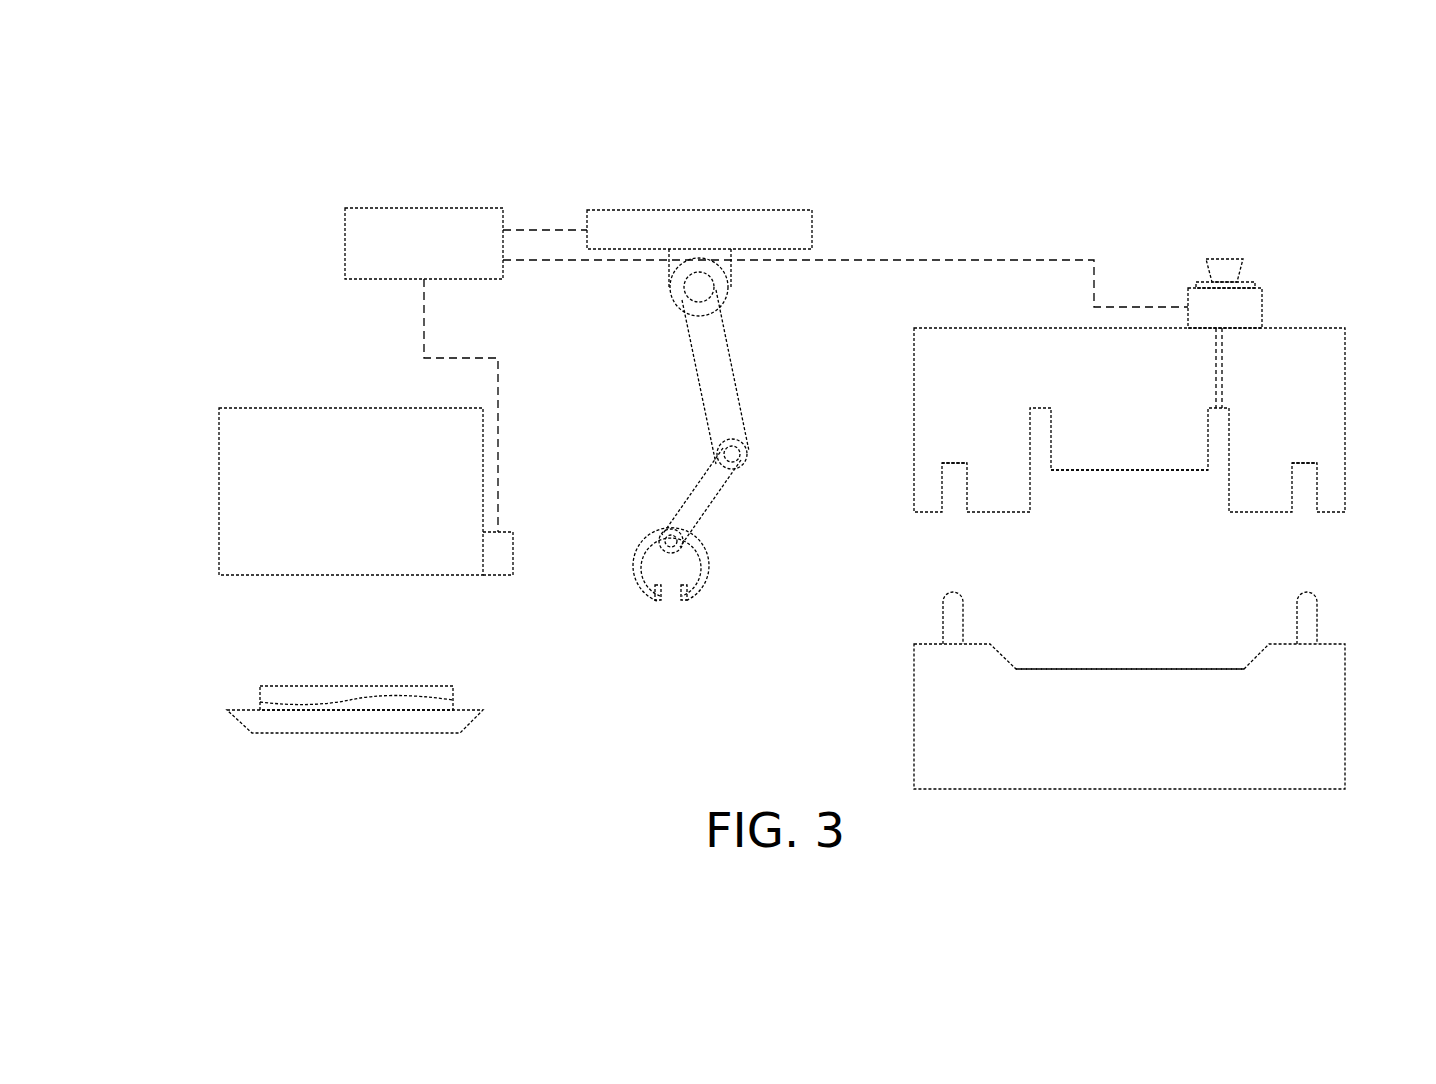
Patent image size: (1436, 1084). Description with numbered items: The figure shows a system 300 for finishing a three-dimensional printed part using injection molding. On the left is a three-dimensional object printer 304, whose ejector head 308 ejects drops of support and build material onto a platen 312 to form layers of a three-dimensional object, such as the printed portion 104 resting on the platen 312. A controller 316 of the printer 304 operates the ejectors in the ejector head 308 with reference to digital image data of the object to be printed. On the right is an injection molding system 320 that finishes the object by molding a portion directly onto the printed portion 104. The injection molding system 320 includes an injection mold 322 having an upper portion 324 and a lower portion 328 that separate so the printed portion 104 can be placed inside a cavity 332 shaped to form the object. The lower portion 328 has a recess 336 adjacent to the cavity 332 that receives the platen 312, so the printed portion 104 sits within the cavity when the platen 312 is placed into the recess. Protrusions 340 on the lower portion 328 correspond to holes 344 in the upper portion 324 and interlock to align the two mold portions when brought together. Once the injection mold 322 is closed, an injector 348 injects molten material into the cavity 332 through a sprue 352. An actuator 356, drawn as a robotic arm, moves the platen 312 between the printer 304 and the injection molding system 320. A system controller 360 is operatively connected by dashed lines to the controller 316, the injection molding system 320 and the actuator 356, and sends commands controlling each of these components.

The system 300 is at (258, 130).
The three-dimensional object printer 304 is at (323, 355).
The ejector head 308 is at (270, 408).
The platen 312 is at (268, 734).
The controller 316 is at (510, 532).
The printed portion 104 is at (276, 685).
The injection molding system 320 is at (1128, 182).
The injection mold 322 is at (1027, 322).
The upper portion 324 is at (928, 365).
The lower portion 328 is at (923, 737).
The cavity 332 is at (1083, 523).
The recess 336 is at (1130, 668).
The protrusions 340 is at (943, 615).
The holes 344 is at (953, 485).
The injector 348 is at (1255, 306).
The sprue 352 is at (1213, 366).
The actuator 356 is at (708, 200).
The system controller 360 is at (423, 208).